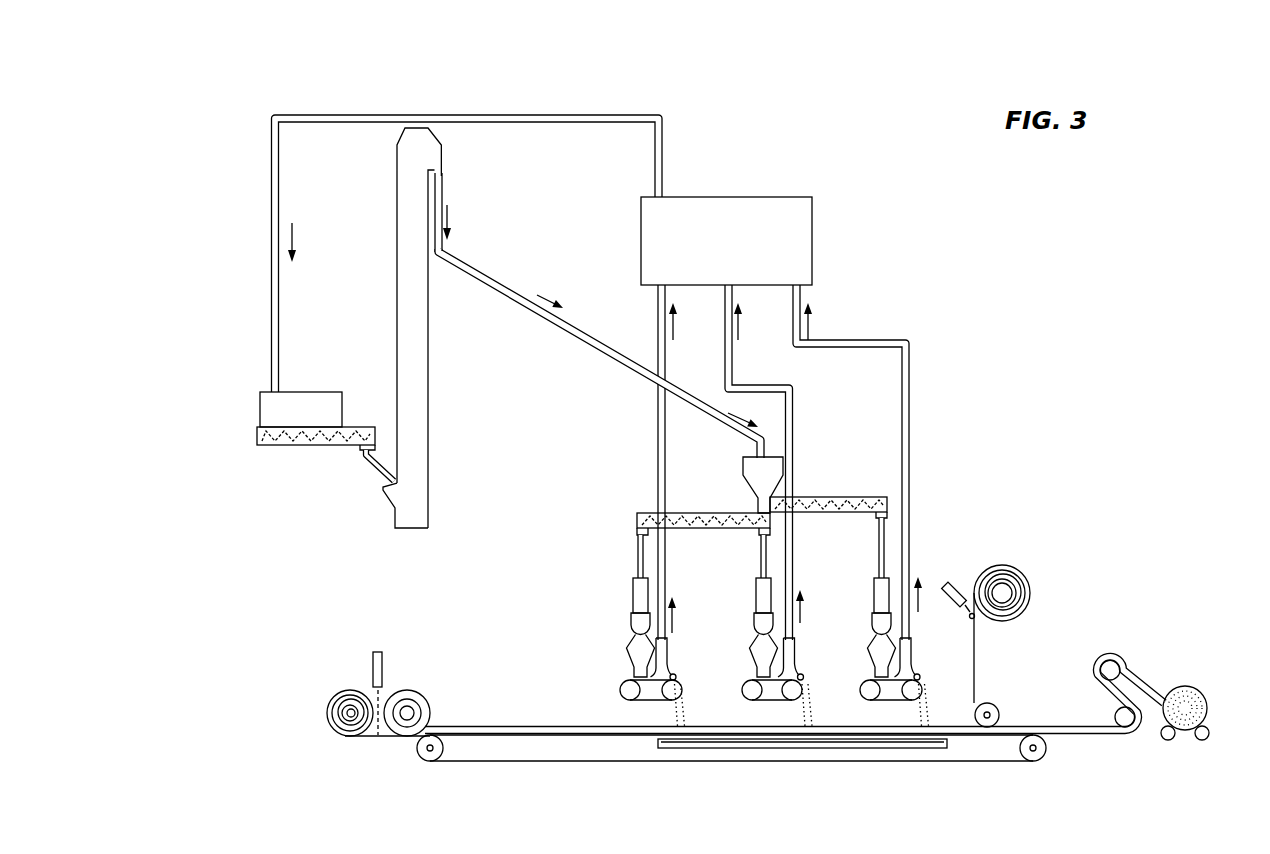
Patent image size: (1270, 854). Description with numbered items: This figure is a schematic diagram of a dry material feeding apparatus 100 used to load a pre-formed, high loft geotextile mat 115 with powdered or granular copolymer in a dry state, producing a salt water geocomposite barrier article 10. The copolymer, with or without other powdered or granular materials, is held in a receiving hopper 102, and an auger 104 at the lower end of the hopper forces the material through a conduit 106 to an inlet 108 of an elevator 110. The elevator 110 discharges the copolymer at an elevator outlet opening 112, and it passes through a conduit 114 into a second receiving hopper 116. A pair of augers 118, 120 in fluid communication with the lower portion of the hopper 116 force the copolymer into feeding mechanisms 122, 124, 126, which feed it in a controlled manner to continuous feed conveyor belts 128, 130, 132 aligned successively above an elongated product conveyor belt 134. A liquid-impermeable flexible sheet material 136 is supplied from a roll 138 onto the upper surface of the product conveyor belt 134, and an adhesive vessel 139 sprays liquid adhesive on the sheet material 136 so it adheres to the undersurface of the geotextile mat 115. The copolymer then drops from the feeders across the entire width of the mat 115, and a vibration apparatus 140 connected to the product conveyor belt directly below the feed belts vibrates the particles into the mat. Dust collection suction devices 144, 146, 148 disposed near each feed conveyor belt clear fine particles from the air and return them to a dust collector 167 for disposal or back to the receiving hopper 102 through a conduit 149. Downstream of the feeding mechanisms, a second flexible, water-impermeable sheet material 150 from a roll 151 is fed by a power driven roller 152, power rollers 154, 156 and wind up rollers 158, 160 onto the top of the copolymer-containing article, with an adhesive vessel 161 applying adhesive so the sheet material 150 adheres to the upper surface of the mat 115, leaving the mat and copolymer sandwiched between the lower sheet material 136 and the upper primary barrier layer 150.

The salt water geocomposite barrier article 10 is at (1186, 672).
The dry material feeding apparatus 100 is at (594, 262).
The receiving hopper 102 is at (317, 392).
The auger 104 is at (293, 446).
The conduit 106 is at (368, 458).
The inlet 108 is at (398, 483).
The elevator 110 is at (434, 328).
The elevator outlet opening 112 is at (443, 183).
The conduit 114 is at (509, 290).
The geotextile mat 115 is at (452, 725).
The receiving hopper 116 is at (778, 467).
The auger 118 is at (698, 512).
The auger 120 is at (859, 496).
The feeding mechanism 122 is at (633, 584).
The feeding mechanism 124 is at (756, 584).
The feeding mechanism 126 is at (873, 584).
The continuous feed conveyor belt 128 is at (644, 701).
The continuous feed conveyor belt 130 is at (765, 701).
The continuous feed conveyor belt 132 is at (882, 701).
The product conveyor belt 134 is at (485, 763).
The liquid-impermeable flexible sheet material 136 is at (387, 738).
The roll 138 is at (339, 692).
The adhesive vessel 139 is at (378, 652).
The vibration apparatus 140 is at (822, 749).
The dust collection suction device 144 is at (667, 651).
The dust collection suction device 146 is at (790, 651).
The dust collection suction device 148 is at (908, 651).
The conduit 149 is at (568, 115).
The second flexible, water-impermeable sheet material 150 is at (978, 653).
The roll 151 is at (1031, 581).
The power driven roller 152 is at (998, 706).
The power roller 154 is at (1115, 713).
The power roller 156 is at (1110, 658).
The wind up roller 158 is at (1162, 739).
The wind up roller 160 is at (1207, 737).
The adhesive vessel 161 is at (951, 581).
The dust collector 167 is at (814, 240).